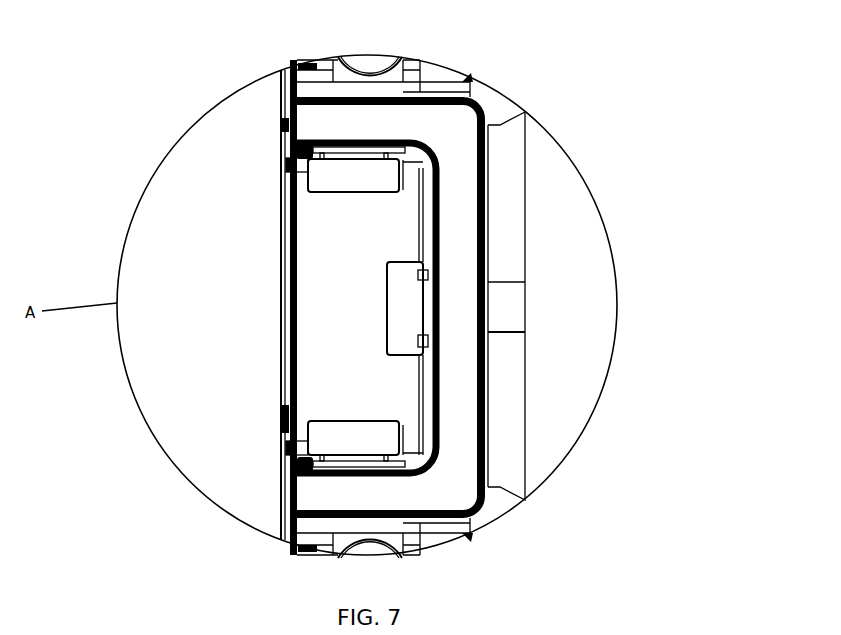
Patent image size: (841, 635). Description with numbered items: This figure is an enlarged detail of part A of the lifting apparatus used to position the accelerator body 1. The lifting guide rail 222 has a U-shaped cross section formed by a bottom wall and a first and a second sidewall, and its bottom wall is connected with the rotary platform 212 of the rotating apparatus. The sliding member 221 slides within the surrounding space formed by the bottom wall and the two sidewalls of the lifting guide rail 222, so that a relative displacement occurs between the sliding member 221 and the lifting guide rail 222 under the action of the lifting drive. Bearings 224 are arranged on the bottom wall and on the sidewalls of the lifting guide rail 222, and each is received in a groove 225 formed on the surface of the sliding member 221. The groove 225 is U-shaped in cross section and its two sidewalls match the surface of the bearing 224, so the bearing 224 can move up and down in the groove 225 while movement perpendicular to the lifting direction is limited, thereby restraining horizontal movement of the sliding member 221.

The accelerator body 1 is at (217, 203).
The rotary platform 212 is at (577, 327).
The sliding member 221 is at (326, 330).
The lifting guide rail 222 is at (487, 413).
The bearing 224 is at (355, 175).
The groove 225 is at (290, 165).